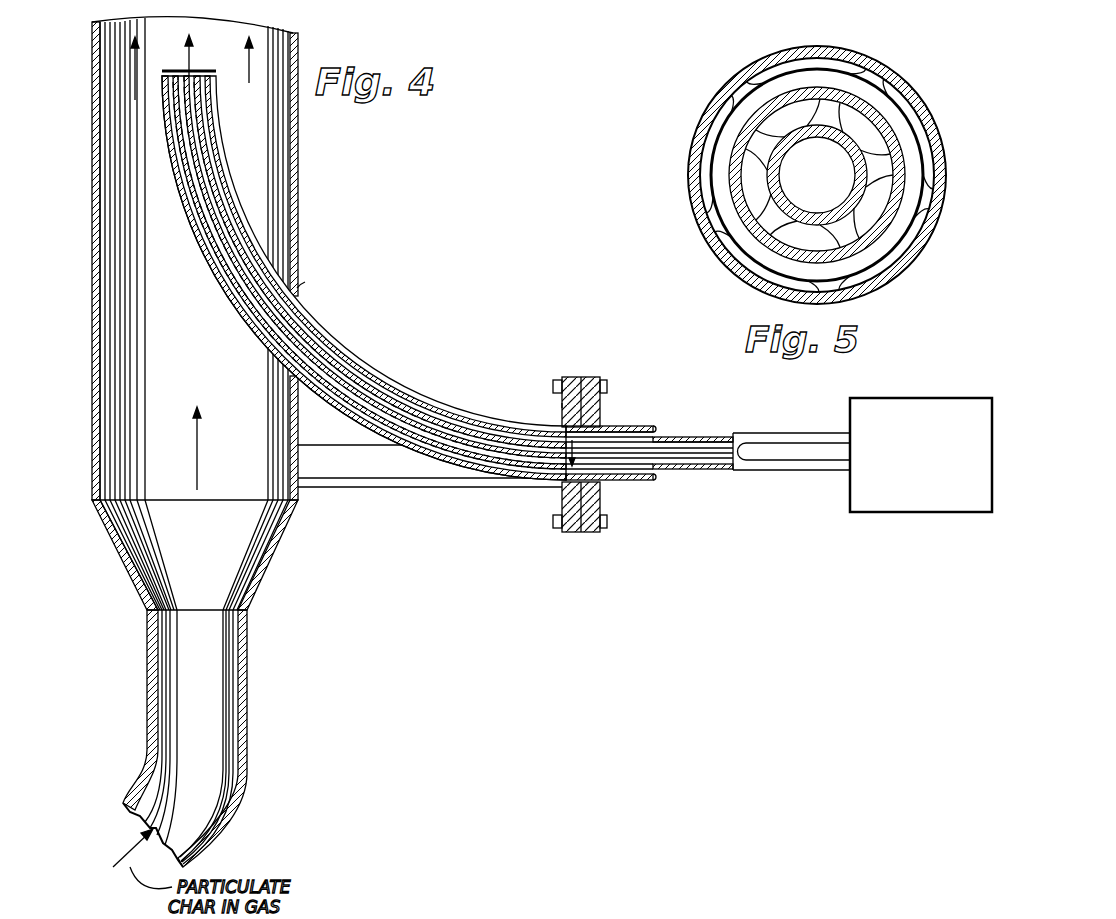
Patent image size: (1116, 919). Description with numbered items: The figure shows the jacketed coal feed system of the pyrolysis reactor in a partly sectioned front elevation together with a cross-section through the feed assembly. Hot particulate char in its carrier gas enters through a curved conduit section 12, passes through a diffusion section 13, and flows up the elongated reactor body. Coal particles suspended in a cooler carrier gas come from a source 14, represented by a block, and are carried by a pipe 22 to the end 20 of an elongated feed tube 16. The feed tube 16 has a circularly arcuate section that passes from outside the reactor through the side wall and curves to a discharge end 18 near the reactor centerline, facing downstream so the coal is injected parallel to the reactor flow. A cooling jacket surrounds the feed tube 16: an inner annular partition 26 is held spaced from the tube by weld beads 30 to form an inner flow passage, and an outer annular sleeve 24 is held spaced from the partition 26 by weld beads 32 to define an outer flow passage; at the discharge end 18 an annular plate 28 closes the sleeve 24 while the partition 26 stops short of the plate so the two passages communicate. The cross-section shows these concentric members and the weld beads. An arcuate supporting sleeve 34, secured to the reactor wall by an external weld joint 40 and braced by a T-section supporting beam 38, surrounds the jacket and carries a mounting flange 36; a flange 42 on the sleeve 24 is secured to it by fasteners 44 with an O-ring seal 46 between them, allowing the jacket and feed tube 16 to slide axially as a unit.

In FIG. 4, the curved conduit section 12 is at (252, 750).
In FIG. 4, the diffusion section 13 is at (264, 575).
In FIG. 4, the source of particulate carbonaceous material 14 is at (890, 398).
In FIG. 4, the feed tube 16 is at (494, 305).
In FIG. 5, the feed tube 16 is at (816, 179).
In FIG. 4, the discharge end 18 is at (192, 70).
In FIG. 4, the end of feed tube 20 is at (570, 440).
In FIG. 4, the pipe 22 is at (778, 440).
In FIG. 5, the pipe 22 is at (817, 175).
In FIG. 4, the outer annular sleeve 24 is at (247, 213).
In FIG. 5, the outer annular sleeve 24 is at (920, 93).
In FIG. 4, the inner annular partition 26 is at (215, 257).
In FIG. 5, the inner annular partition 26 is at (948, 172).
In FIG. 4, the annular plate 28 is at (177, 70).
In FIG. 4, the weld beads 30 is at (247, 298).
In FIG. 5, the weld beads 30 is at (747, 280).
In FIG. 4, the weld beads 32 is at (177, 128).
In FIG. 5, the weld beads 32 is at (692, 140).
In FIG. 4, the supporting sleeve 34 is at (356, 347).
In FIG. 5, the supporting sleeve 34 is at (737, 77).
In FIG. 4, the mounting flange 36 is at (563, 403).
In FIG. 4, the supporting beam 38 is at (477, 487).
In FIG. 4, the external weld joint 40 is at (297, 288).
In FIG. 4, the flange 42 is at (602, 408).
In FIG. 4, the fasteners 44 is at (553, 395).
In FIG. 4, the O-ring seal 46 is at (582, 377).